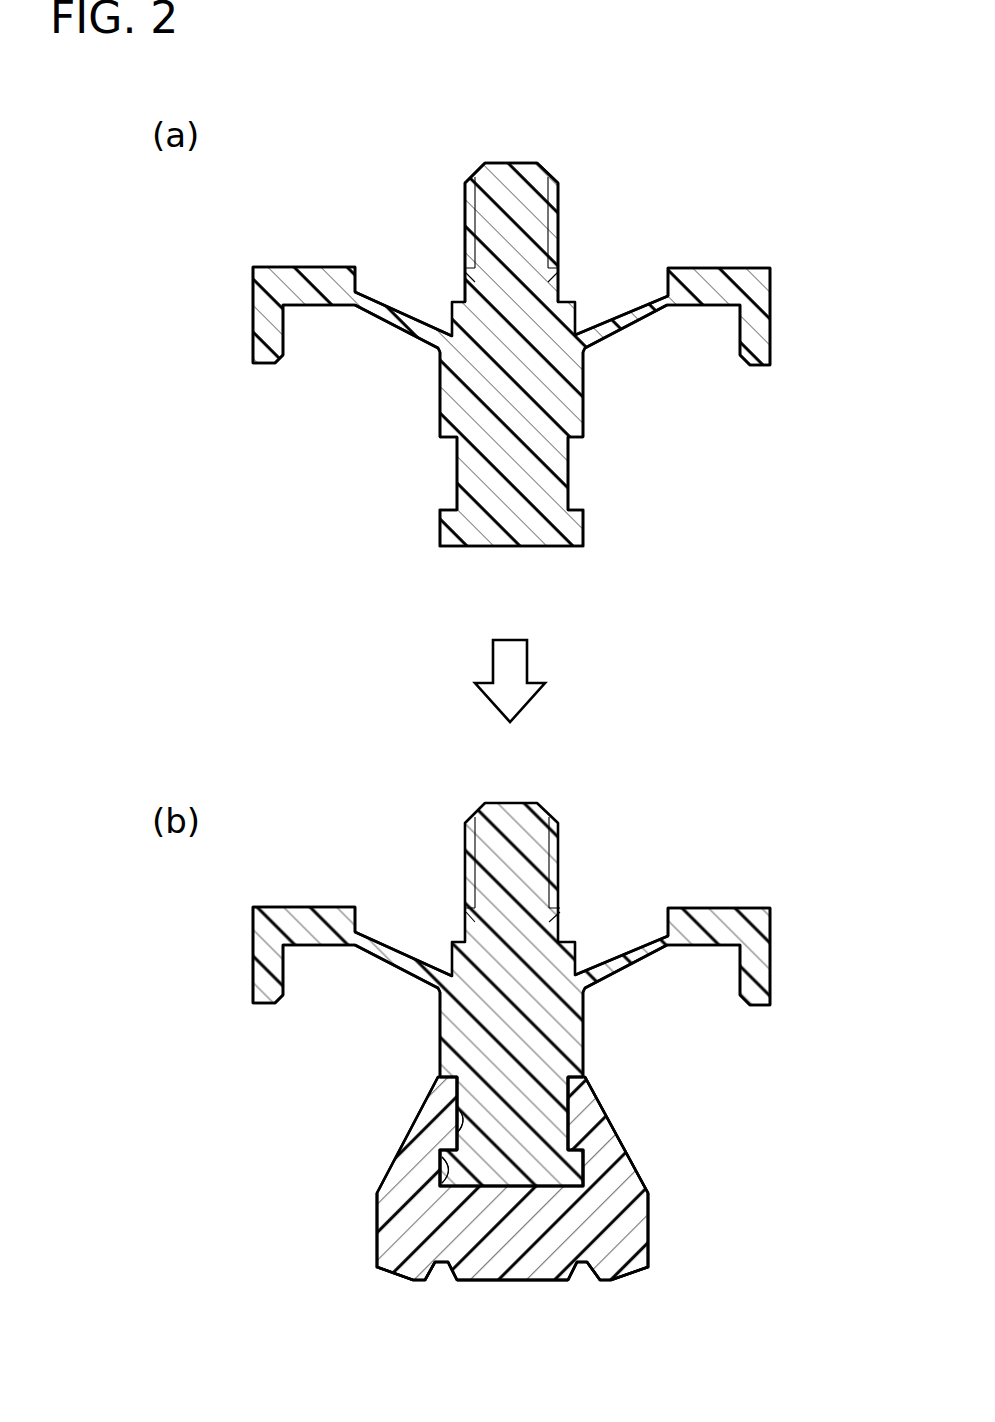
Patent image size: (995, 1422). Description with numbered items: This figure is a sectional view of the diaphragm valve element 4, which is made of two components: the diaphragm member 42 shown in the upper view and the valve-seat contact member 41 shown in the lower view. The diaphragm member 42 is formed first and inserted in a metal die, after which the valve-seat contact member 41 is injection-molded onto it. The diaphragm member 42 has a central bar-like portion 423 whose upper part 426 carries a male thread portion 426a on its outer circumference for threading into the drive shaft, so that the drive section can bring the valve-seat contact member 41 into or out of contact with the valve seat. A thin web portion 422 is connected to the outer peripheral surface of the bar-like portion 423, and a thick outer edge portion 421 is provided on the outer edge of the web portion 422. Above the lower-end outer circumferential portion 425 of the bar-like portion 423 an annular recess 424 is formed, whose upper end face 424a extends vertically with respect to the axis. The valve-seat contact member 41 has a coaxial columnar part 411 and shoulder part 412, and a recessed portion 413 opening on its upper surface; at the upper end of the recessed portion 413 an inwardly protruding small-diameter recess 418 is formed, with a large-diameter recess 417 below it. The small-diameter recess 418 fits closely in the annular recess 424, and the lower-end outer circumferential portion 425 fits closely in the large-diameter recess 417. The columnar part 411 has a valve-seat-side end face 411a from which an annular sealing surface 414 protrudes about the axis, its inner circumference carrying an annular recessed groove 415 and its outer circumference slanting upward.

The diaphragm valve element 4 is at (612, 826).
The valve-seat contact member 41 is at (720, 1083).
The columnar part 411 is at (642, 1222).
The valve-seat-side end face 411a is at (500, 1284).
The shoulder part 412 is at (615, 1138).
The recessed portion 413 is at (303, 1118).
The annular sealing surface 414 is at (604, 1284).
The annular recessed groove 415 is at (428, 1284).
The large-diameter recess 417 is at (440, 1177).
The small-diameter recess 418 is at (458, 1112).
The diaphragm member 42 is at (604, 257).
The outer edge portion 421 is at (757, 314).
The web portion 422 is at (626, 326).
The bar-like portion 423 is at (570, 413).
The annular recess 424 is at (567, 472).
The upper end face 424a is at (572, 438).
The lower-end outer circumferential portion 425 is at (573, 518).
The upper part 426 is at (524, 192).
The male thread portion 426a is at (553, 212).